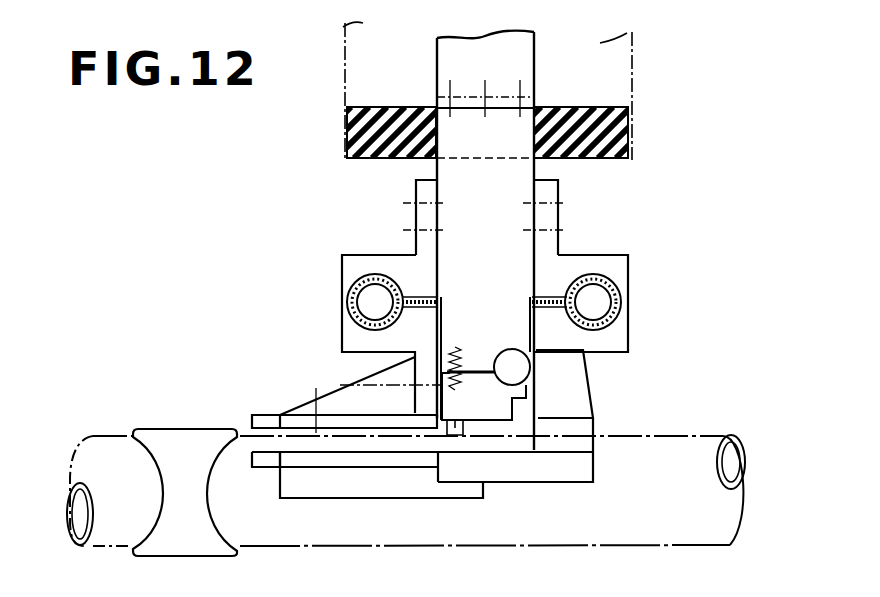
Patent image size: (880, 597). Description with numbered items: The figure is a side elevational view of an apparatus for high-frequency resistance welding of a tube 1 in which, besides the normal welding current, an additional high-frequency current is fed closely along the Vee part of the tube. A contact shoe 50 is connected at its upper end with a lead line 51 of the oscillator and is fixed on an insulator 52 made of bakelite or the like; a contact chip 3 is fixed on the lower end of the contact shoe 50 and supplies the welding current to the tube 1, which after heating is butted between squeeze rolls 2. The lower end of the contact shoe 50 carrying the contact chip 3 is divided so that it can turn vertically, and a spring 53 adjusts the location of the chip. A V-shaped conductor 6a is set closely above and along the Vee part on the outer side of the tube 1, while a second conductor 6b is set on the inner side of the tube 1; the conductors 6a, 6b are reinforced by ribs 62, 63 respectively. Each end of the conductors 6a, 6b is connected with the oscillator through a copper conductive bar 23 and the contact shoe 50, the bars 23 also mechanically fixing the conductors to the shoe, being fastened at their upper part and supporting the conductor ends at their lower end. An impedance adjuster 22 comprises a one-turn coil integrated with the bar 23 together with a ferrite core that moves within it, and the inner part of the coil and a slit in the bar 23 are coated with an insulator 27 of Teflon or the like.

The tube 1 is at (95, 443).
The squeeze rolls 2 is at (175, 435).
The contact chip 3 is at (455, 435).
The conductor 6a is at (265, 418).
The conductor 6b is at (263, 457).
The impedance adjuster 22 is at (348, 275).
The copper conductive bar 23 is at (418, 190).
The insulator 27 is at (628, 278).
The contact shoe 50 is at (503, 252).
The lead line 51 is at (447, 59).
The insulator 52 is at (625, 135).
The spring 53 is at (460, 393).
The rib 62 is at (333, 392).
The rib 63 is at (337, 482).